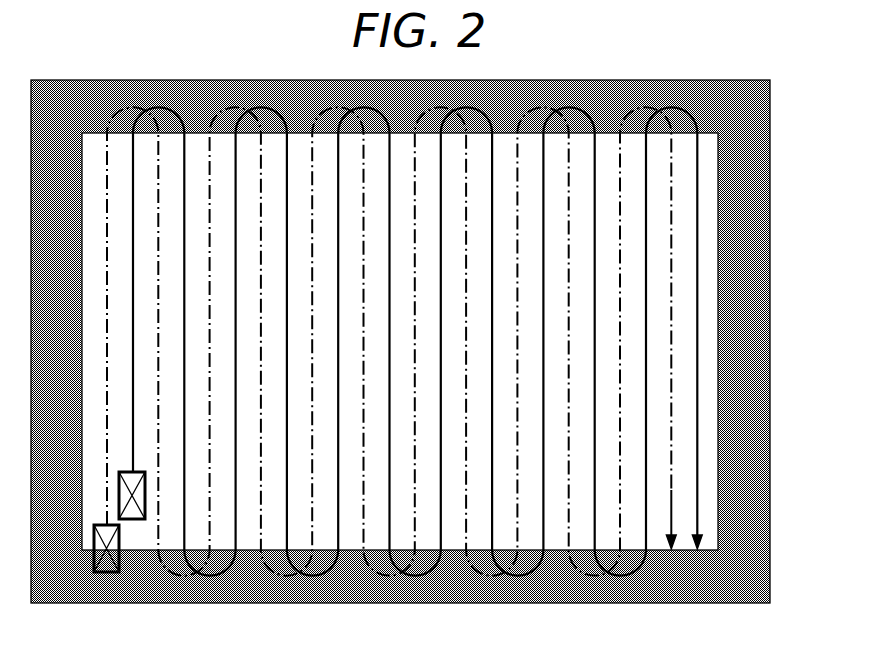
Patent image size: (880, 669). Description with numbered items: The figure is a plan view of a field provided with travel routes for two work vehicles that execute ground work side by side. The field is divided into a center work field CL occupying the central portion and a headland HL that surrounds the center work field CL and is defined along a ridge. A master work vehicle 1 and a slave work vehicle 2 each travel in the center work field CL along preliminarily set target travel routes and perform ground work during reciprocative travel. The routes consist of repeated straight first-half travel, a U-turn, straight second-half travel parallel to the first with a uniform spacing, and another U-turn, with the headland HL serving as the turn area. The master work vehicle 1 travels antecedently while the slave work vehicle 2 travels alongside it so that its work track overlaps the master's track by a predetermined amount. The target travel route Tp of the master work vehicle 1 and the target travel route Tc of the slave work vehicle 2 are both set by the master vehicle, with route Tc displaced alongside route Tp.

The headland HL is at (743, 227).
The center work field CL is at (683, 317).
The master work vehicle 1 is at (137, 519).
The slave work vehicle 2 is at (106, 573).
The target travel route of the slave work vehicle Tc is at (270, 575).
The target travel route of the master work vehicle Tp is at (332, 570).